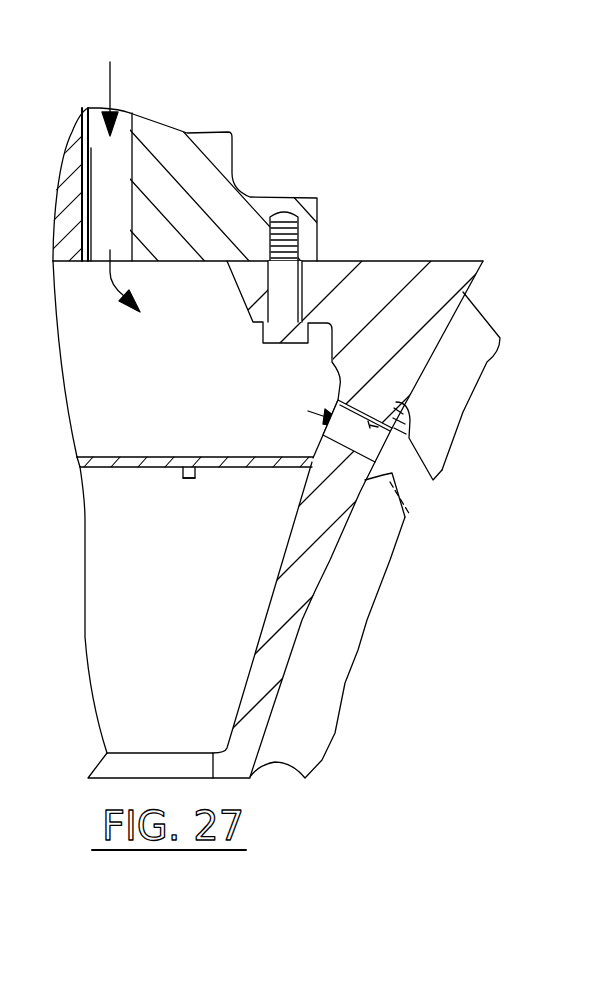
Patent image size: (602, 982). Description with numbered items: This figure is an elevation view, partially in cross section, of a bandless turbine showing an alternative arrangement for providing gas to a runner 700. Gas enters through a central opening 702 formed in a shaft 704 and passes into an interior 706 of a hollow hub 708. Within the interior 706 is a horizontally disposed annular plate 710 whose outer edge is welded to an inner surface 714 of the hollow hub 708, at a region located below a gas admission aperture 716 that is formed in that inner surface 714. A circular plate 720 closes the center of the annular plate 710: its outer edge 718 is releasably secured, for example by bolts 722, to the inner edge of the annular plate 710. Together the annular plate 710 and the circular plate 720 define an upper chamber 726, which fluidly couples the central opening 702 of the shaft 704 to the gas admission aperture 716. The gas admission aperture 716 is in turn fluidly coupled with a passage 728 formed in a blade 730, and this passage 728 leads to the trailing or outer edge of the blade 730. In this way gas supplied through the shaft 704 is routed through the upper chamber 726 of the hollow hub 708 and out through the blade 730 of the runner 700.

The runner 700 is at (362, 184).
The central opening 702 is at (112, 152).
The shaft 704 is at (222, 147).
The interior 706 is at (192, 617).
The hollow hub 708 is at (413, 261).
The annular plate 710 is at (270, 450).
The inner surface 714 is at (180, 455).
The gas admission aperture 716 is at (375, 410).
The outer edge 718 is at (200, 468).
The circular plate 720 is at (123, 467).
The bolts 722 is at (187, 479).
The upper chamber 726 is at (213, 334).
The passage 728 is at (392, 448).
The blade 730 is at (482, 310).